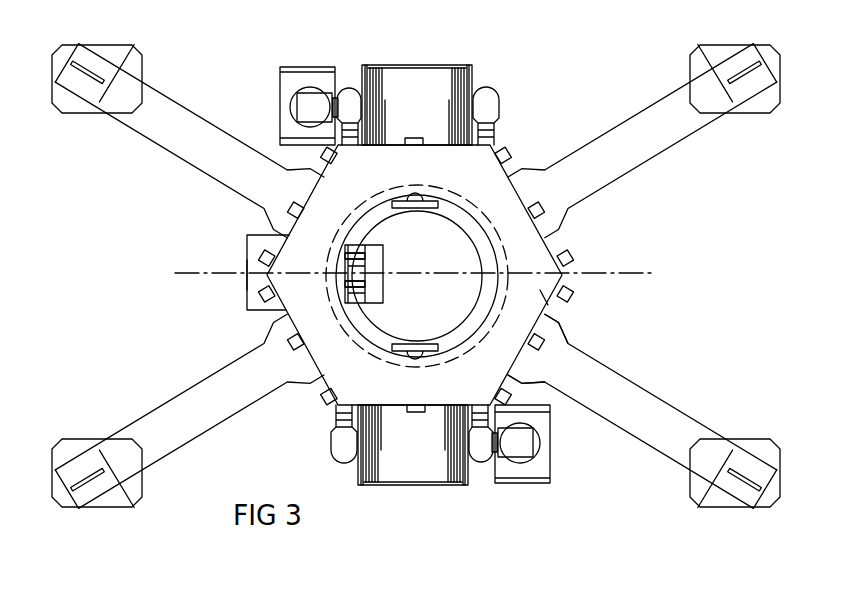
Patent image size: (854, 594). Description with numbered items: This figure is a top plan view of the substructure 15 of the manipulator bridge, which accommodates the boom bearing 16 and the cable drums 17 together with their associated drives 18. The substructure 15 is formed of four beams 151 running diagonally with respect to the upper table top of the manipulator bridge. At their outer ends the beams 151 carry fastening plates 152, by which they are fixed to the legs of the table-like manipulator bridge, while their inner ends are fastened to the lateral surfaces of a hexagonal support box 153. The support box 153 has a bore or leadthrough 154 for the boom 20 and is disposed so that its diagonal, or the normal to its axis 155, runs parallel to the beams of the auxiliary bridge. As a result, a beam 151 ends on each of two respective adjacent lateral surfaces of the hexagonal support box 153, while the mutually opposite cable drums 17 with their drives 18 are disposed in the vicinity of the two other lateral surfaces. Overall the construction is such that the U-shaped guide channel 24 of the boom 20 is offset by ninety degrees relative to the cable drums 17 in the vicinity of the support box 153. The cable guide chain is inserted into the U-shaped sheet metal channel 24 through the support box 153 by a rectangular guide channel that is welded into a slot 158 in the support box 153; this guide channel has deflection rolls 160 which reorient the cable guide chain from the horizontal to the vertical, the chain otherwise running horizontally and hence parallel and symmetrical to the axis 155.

The substructure 15 is at (549, 305).
The boom bearing 16 is at (500, 250).
The cable drums 17 is at (426, 80).
The drives 18 is at (309, 92).
The boom 20 is at (467, 229).
The U-shaped guide channel 24 is at (375, 246).
The beams 151 is at (156, 133).
The fastening plates 152 is at (138, 63).
The hexagonal support box 153 is at (545, 254).
The bore or leadthrough 154 is at (452, 208).
The axis 155 is at (285, 278).
The slot 158 is at (259, 236).
The deflection rolls 160 is at (371, 301).